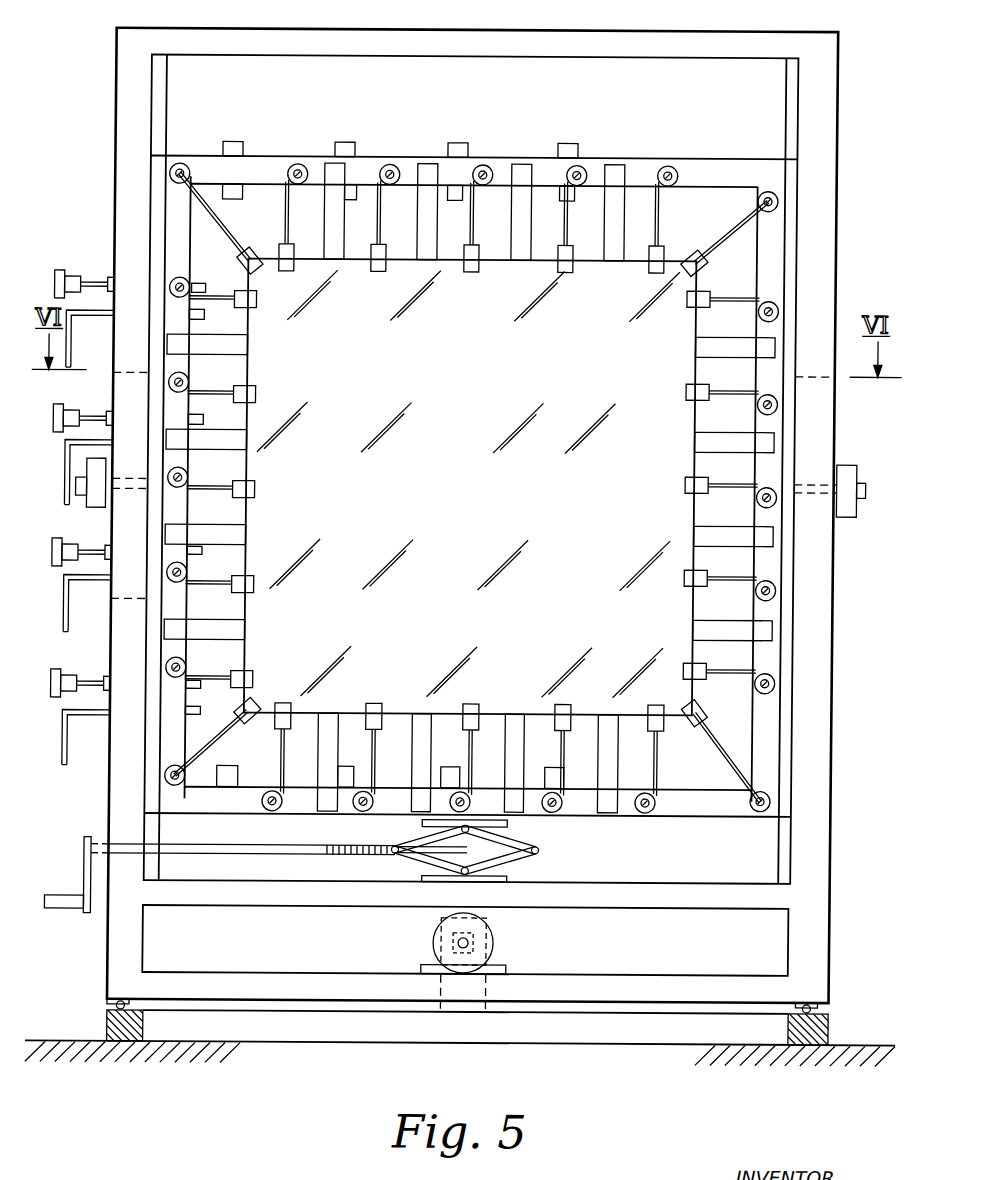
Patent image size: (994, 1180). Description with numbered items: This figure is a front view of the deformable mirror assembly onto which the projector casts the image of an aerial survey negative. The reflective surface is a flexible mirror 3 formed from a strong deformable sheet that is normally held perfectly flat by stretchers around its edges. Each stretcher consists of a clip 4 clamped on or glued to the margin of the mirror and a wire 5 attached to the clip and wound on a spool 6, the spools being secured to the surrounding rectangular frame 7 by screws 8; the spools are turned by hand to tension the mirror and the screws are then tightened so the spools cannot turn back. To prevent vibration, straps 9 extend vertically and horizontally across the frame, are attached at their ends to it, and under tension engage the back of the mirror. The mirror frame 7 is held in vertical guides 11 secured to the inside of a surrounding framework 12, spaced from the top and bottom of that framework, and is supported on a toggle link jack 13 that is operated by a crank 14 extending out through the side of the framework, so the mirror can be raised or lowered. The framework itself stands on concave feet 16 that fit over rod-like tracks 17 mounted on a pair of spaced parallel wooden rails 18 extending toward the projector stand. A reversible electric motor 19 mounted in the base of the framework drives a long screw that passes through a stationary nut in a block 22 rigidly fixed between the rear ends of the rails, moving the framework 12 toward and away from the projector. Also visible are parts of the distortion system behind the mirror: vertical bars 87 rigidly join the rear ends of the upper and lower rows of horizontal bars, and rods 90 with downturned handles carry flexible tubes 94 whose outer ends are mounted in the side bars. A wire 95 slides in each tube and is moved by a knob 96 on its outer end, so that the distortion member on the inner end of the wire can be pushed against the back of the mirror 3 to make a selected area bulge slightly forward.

The flexible mirror 3 is at (478, 499).
The clips 4 is at (255, 393).
The wires 5 is at (666, 218).
The spools 6 is at (389, 163).
The rectangular frame 7 is at (707, 165).
The screws 8 is at (486, 164).
The straps 9 is at (518, 262).
The vertical guides 11 is at (160, 108).
The framework 12 is at (821, 120).
The toggle link jack 13 is at (540, 852).
The crank 14 is at (86, 864).
The concave feet 16 is at (818, 1004).
The tracks 17 is at (114, 1003).
The wooden rails 18 is at (112, 1030).
The reversible electric motor 19 is at (498, 942).
The block 22 is at (447, 1012).
The vertical bars 87 is at (452, 200).
The rods 90 is at (100, 720).
The flexible tubes 94 is at (193, 288).
The wire 95 is at (92, 678).
The knob 96 is at (72, 276).